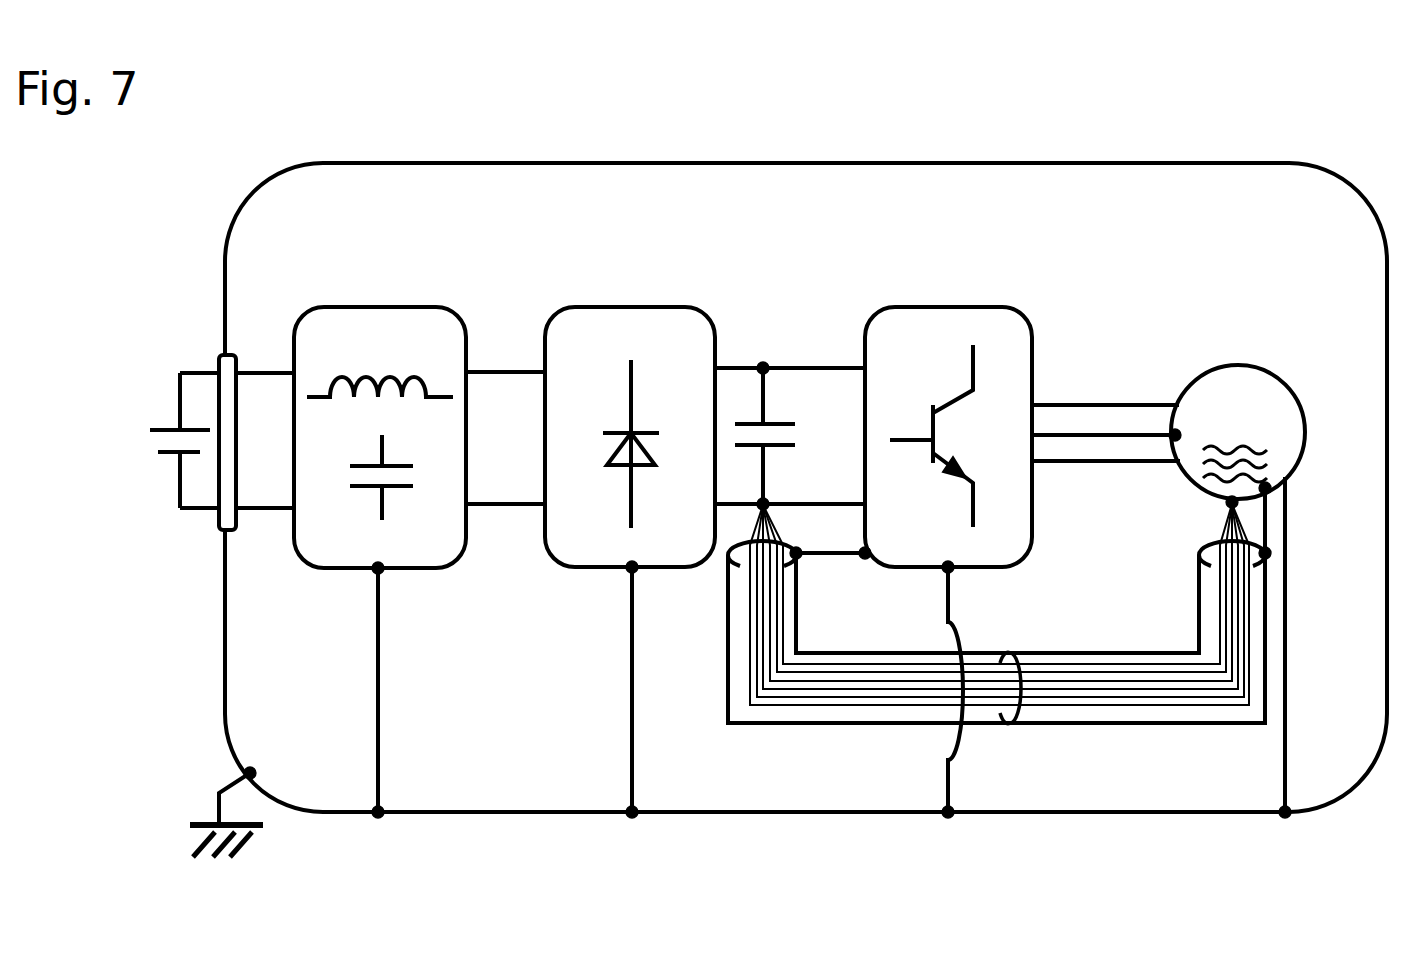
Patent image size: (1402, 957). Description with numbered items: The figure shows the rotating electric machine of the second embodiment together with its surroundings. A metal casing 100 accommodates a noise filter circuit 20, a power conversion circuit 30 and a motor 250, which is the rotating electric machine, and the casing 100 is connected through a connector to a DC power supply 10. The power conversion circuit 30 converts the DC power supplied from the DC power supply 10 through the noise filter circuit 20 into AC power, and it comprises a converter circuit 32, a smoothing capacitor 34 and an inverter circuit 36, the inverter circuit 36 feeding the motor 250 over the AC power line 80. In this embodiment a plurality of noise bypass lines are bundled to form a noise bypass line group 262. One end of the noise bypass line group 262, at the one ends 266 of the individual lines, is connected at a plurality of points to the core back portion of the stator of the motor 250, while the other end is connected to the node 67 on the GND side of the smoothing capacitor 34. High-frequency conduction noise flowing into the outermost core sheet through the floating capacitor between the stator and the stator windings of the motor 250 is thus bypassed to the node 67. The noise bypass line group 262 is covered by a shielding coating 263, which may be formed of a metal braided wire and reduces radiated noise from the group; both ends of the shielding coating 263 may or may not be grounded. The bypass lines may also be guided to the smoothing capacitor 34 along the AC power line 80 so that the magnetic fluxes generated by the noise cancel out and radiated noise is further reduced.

The metal casing 100 is at (370, 163).
The DC power supply 10 is at (173, 428).
The noise filter circuit 20 is at (345, 307).
The power conversion circuit 30 is at (1040, 252).
The converter circuit 32 is at (602, 307).
The smoothing capacitor 34 is at (790, 422).
The inverter circuit 36 is at (915, 307).
The node 67 is at (758, 506).
The AC power line 80 is at (1056, 398).
The motor 250 is at (1262, 349).
The noise bypass line group 262 is at (999, 658).
The shielding coating 263 is at (1068, 725).
The one ends of the noise bypass lines 266 is at (1230, 505).